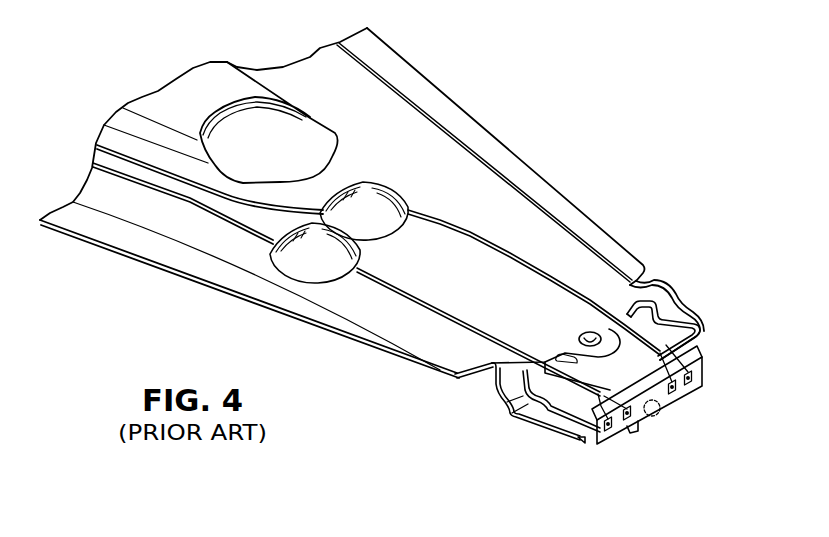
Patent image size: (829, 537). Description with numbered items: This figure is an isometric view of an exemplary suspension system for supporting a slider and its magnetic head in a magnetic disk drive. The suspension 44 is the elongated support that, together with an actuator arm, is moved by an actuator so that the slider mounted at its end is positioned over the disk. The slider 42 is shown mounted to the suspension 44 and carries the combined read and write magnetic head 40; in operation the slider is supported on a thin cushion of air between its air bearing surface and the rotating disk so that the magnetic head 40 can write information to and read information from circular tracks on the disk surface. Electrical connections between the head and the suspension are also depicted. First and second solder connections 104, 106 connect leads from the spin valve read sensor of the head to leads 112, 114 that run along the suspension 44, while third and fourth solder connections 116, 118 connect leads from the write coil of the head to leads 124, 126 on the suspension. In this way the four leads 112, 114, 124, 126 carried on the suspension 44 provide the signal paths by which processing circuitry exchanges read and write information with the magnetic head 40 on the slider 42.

The magnetic head 40 is at (661, 416).
The slider 42 is at (550, 433).
The suspension 44 is at (508, 144).
The first solder connection 104 is at (607, 428).
The second solder connection 106 is at (690, 378).
The lead 112 is at (380, 292).
The lead 114 is at (565, 283).
The third solder connection 116 is at (627, 421).
The fourth solder connection 118 is at (672, 392).
The lead 124 is at (431, 307).
The lead 126 is at (483, 244).